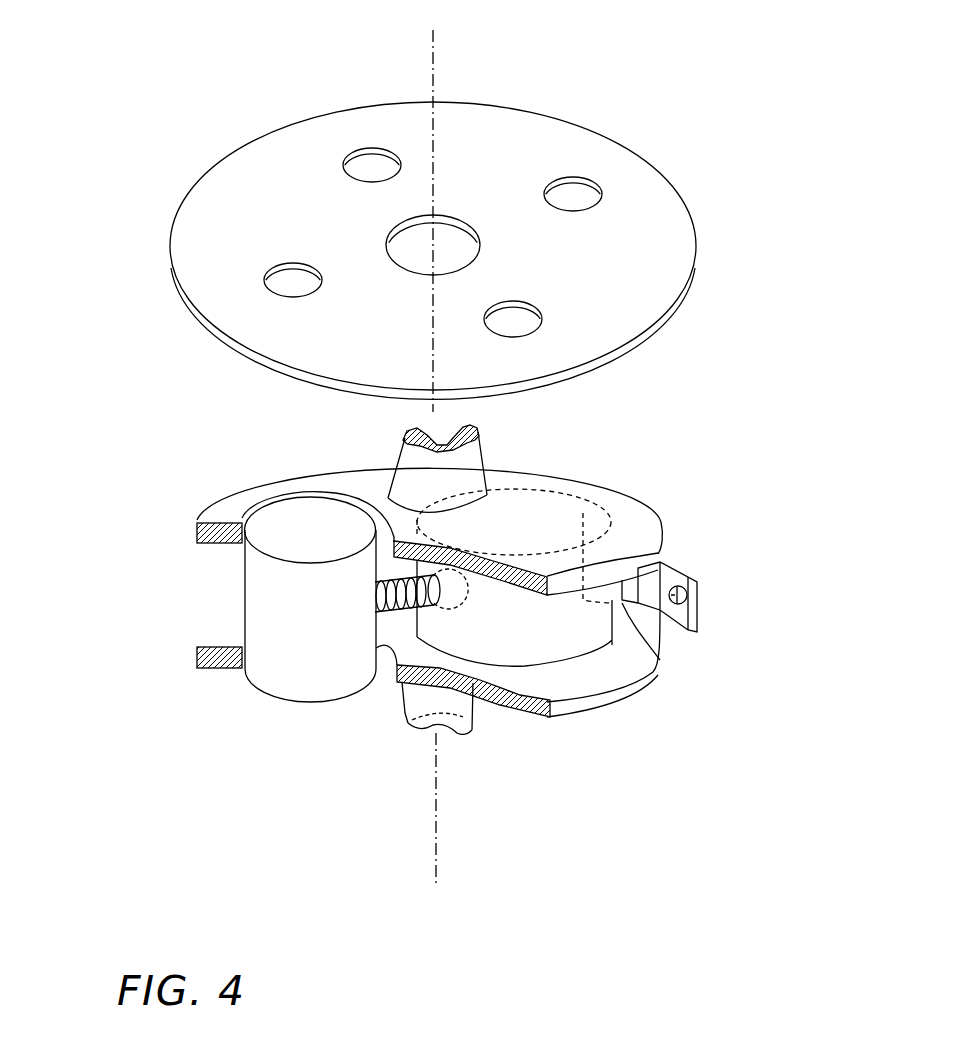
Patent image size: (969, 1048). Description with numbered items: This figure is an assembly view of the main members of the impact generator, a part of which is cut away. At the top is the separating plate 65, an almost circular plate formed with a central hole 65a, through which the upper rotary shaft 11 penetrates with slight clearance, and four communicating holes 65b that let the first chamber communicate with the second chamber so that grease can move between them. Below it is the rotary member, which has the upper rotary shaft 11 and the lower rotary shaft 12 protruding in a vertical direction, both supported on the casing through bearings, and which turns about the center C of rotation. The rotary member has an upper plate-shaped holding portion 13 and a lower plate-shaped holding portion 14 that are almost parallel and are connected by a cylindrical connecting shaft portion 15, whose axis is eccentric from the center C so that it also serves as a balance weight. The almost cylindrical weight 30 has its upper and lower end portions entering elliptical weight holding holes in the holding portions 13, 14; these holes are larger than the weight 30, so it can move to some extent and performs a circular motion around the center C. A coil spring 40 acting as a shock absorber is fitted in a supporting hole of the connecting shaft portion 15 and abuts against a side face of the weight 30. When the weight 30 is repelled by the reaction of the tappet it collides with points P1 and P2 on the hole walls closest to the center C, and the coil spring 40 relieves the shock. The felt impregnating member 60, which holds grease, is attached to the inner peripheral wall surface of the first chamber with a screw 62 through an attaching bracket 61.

The separating plate 65 is at (650, 240).
The central hole 65a is at (446, 245).
The communicating hole 65b is at (368, 165).
The rotary shaft 11 is at (456, 477).
The point on internal wall of upper weight holding hole P1 is at (386, 518).
The upper plate-shaped holding portion 13 is at (225, 515).
The weight 30 is at (282, 603).
The lower plate-shaped holding portion 14 is at (222, 640).
The point on internal wall of lower weight holding hole P2 is at (376, 622).
The connecting shaft portion 15 is at (557, 632).
The rotary shaft 12 is at (477, 703).
The impregnating member 60 is at (660, 658).
The coil spring 40 is at (438, 600).
The attaching bracket 61 is at (683, 567).
The screw 62 is at (693, 613).
The center of rotation C is at (437, 838).